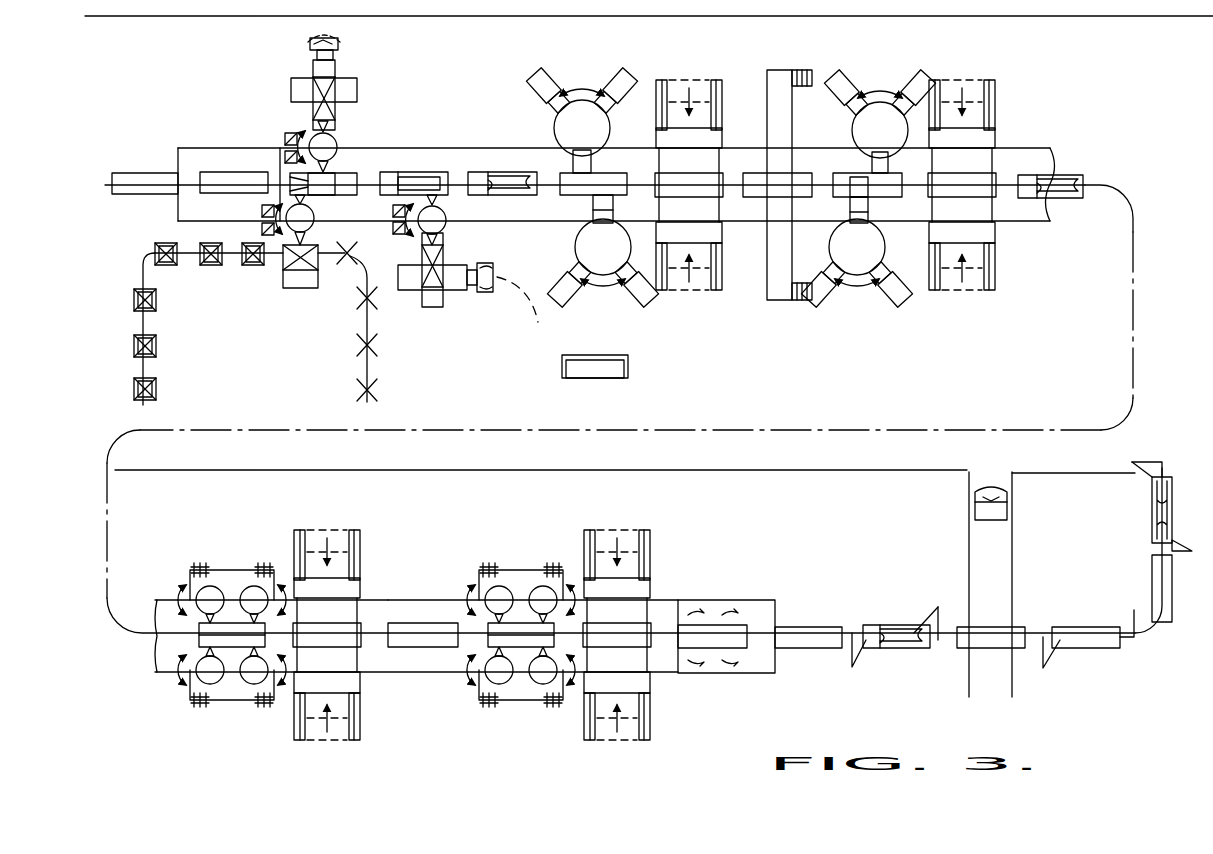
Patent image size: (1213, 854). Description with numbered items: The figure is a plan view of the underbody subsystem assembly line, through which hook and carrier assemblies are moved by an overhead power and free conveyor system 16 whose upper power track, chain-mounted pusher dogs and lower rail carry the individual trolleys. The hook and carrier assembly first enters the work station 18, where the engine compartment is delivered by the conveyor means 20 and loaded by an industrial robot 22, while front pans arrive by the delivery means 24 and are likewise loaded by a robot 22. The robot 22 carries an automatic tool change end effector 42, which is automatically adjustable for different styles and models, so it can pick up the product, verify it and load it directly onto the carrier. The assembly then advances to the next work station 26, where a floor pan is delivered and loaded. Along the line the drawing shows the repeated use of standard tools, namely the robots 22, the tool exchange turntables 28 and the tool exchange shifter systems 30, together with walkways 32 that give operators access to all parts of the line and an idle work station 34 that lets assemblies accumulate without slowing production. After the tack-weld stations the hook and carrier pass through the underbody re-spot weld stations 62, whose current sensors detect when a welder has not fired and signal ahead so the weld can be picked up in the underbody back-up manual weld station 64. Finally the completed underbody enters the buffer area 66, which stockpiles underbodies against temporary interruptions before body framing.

The overhead power and free conveyor system 16 is at (1153, 283).
The work station 18 is at (360, 136).
The conveyor means 20 is at (188, 270).
The industrial robot 22 is at (298, 125).
The delivery means 24 is at (352, 48).
The work station 26 is at (435, 137).
The tool exchange turntable 28 is at (589, 78).
The tool exchange shifter system 30 is at (683, 295).
The walkway 32 is at (783, 300).
The idle work station 34 is at (510, 227).
The automatic tool change end effector 42 is at (283, 72).
The underbody re-spot weld station 62 is at (153, 690).
The underbody back-up manual weld station 64 is at (714, 681).
The buffer area 66 is at (497, 172).